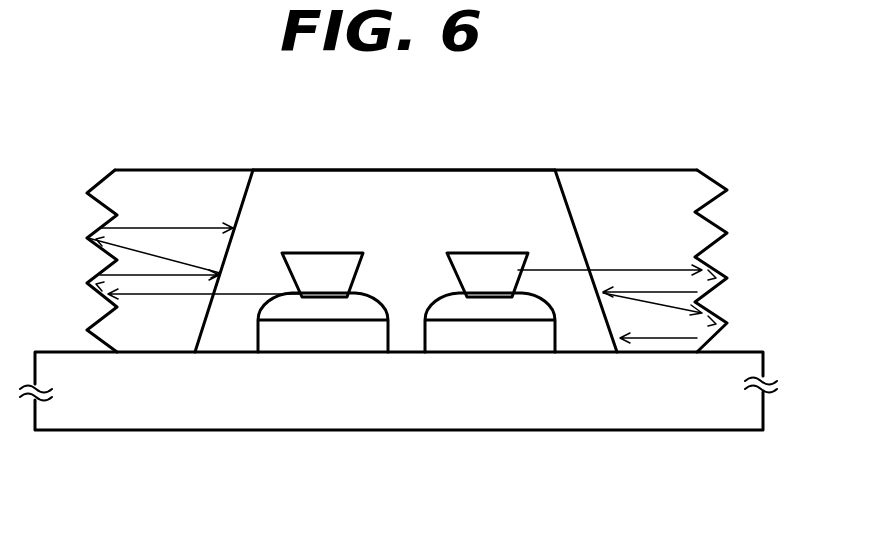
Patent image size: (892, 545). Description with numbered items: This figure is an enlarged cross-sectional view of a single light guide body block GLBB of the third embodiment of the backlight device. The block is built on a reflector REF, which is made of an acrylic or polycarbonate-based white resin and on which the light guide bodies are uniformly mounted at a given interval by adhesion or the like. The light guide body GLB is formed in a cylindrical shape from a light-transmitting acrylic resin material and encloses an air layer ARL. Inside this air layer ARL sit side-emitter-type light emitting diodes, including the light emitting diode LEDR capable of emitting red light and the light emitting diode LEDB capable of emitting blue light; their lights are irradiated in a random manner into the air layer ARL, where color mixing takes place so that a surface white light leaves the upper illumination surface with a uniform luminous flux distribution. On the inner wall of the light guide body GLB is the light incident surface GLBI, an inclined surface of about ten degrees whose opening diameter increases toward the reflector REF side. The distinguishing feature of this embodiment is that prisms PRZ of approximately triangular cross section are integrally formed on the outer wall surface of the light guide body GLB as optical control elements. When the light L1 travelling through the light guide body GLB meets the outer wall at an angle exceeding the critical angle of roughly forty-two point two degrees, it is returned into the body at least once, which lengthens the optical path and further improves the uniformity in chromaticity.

The light guide body block GLBB is at (152, 170).
The light emitting diode capable of emitting red light LEDR is at (318, 263).
The air layer ARL is at (375, 182).
The light emitting diode capable of emitting blue light LEDB is at (488, 263).
The light incident surface GLBI is at (570, 216).
The light guide body GLB is at (415, 210).
The light L1 is at (653, 268).
The prisms PRZ is at (693, 190).
The reflector REF is at (690, 408).